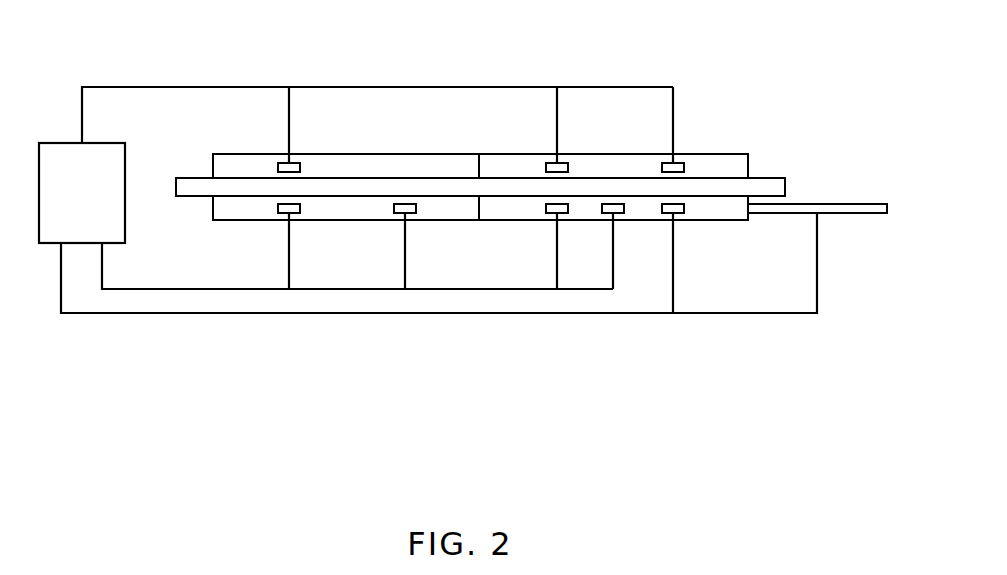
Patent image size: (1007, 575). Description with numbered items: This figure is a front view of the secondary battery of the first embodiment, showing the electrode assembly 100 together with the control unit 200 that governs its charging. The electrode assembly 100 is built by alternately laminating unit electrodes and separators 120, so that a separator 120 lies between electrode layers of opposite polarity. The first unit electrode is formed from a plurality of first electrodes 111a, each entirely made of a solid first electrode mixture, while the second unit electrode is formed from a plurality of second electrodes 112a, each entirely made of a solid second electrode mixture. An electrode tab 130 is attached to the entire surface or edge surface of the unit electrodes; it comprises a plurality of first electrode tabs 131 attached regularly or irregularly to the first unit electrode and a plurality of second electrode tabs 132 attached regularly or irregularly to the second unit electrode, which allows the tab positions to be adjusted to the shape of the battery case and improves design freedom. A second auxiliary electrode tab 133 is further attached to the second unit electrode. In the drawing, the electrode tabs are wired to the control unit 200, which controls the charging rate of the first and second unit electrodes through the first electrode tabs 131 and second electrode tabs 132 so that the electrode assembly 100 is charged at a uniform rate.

The electrode assembly 100 is at (547, 232).
The control unit 200 is at (44, 142).
The first electrode 111a is at (246, 160).
The second electrode 112a is at (243, 213).
The separator 120 is at (186, 187).
The electrode tab 130 is at (606, 246).
The first electrode tab 131 is at (666, 163).
The second electrode tab 132 is at (610, 213).
The second auxiliary electrode tab 133 is at (678, 216).